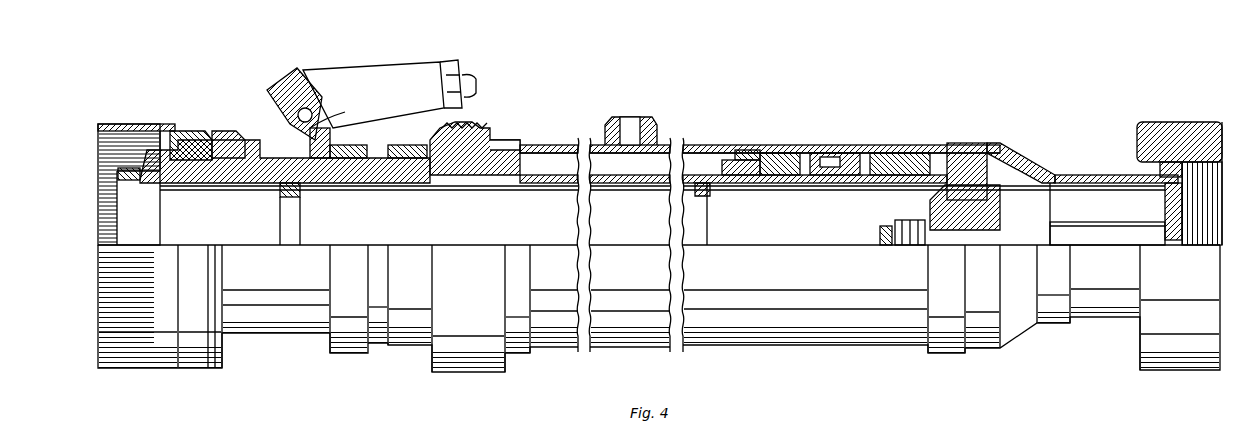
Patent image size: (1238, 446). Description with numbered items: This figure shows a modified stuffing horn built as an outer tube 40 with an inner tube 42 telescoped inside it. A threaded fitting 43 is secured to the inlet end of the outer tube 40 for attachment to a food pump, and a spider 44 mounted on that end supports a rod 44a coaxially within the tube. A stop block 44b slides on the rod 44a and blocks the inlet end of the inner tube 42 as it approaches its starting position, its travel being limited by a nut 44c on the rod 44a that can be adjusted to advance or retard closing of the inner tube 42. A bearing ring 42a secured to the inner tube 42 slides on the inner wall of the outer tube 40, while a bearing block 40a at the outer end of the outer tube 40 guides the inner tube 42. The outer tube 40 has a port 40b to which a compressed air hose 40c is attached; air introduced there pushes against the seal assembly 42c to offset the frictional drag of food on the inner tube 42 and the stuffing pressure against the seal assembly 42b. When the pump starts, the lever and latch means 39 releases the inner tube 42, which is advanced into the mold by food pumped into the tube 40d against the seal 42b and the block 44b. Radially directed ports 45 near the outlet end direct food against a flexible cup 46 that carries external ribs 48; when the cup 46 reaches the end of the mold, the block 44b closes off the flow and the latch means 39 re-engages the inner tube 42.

The lever and latch means 39 is at (408, 60).
The outer tube 40 is at (804, 144).
The bearing block 40a is at (470, 140).
The port 40b is at (640, 154).
The compressed air hose 40c is at (633, 103).
The tube 40d is at (1108, 176).
The inner tube 42 is at (628, 186).
The bearing ring 42a is at (784, 183).
The seal assembly 42b is at (826, 148).
The seal assembly 42c is at (750, 145).
The threaded fitting 43 is at (1164, 120).
The spider 44 is at (114, 208).
The rod 44a is at (1072, 230).
The stop block 44b is at (932, 226).
The nut 44c is at (884, 222).
The radially directed ports 45 is at (118, 171).
The flexible cup 46 is at (158, 128).
The external ribs 48 is at (134, 340).